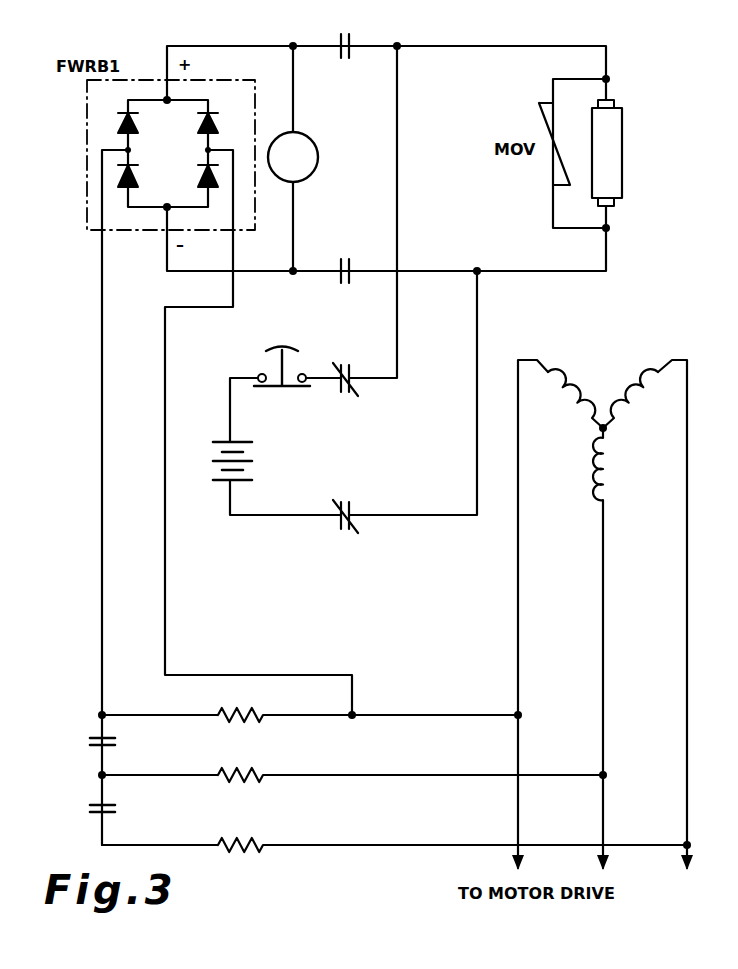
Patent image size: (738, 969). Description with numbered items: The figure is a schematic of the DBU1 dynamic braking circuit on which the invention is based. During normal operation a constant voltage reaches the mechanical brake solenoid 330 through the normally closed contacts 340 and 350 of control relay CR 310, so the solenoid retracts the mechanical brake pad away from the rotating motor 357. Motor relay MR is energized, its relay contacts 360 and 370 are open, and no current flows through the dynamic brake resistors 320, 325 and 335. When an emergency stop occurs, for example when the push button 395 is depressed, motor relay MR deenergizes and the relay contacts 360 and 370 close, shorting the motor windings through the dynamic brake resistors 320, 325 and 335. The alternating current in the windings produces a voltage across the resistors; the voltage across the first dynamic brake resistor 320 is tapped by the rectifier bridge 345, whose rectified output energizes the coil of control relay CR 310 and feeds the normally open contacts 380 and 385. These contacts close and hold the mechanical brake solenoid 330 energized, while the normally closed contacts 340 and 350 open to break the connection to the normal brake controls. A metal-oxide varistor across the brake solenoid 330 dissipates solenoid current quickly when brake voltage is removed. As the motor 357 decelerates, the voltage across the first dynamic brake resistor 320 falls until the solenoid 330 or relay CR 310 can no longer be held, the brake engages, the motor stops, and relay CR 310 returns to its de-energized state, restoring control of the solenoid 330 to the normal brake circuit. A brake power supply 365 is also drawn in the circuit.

The rectifier bridge 345 is at (142, 147).
The normally open contact CR1 380 is at (353, 52).
The control relay CR 310 is at (312, 170).
The mechanical brake solenoid 330 is at (623, 134).
The normally open contact CR2 385 is at (340, 277).
The push button 395 is at (261, 372).
The normally closed contact CR4 350 is at (345, 393).
The brake power supply 365 is at (228, 485).
The normally closed contact CR3 340 is at (345, 520).
The motor 357 is at (603, 375).
The dynamic brake resistor R1 320 is at (263, 717).
The dynamic brake resistor R2 325 is at (263, 778).
The dynamic brake resistor R3 335 is at (263, 847).
The relay contact MR1 360 is at (109, 746).
The relay contact MR2 370 is at (109, 813).